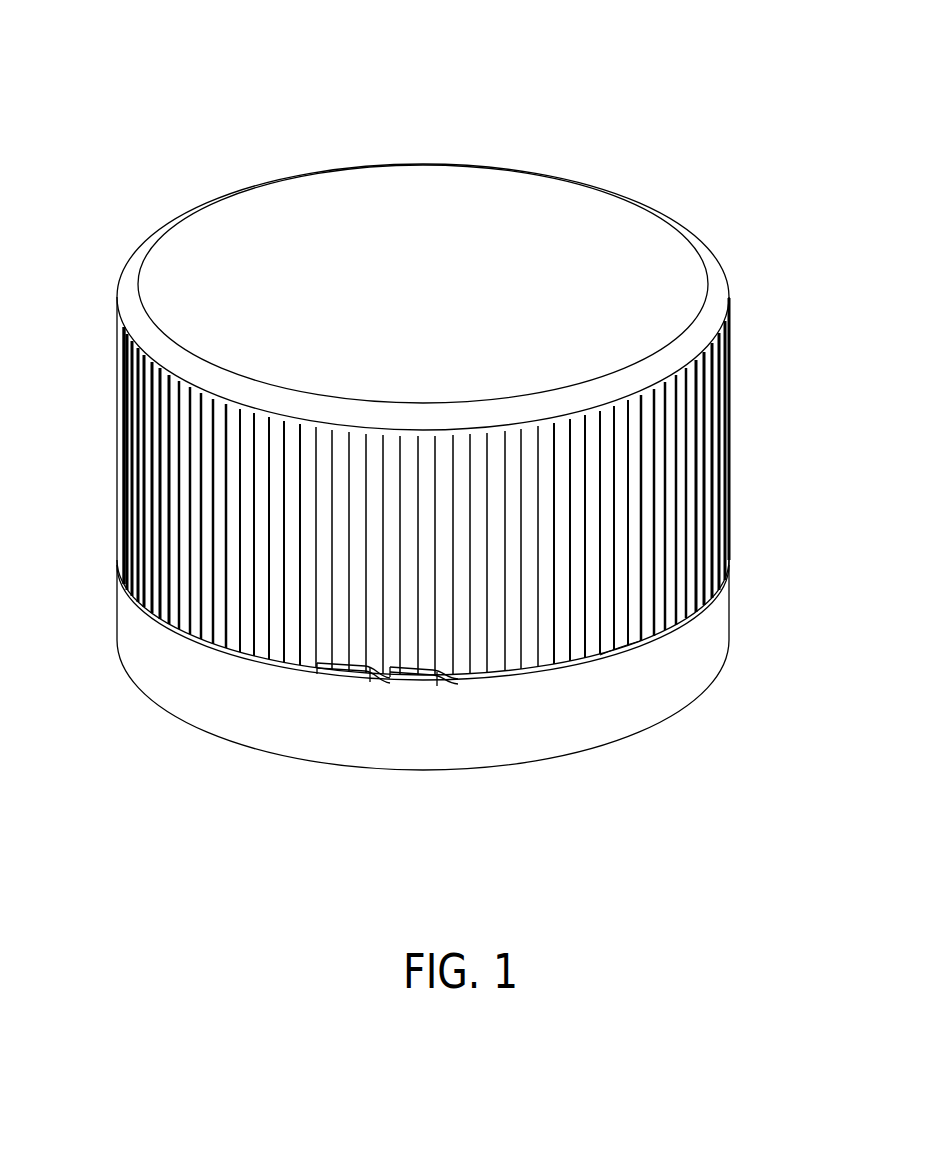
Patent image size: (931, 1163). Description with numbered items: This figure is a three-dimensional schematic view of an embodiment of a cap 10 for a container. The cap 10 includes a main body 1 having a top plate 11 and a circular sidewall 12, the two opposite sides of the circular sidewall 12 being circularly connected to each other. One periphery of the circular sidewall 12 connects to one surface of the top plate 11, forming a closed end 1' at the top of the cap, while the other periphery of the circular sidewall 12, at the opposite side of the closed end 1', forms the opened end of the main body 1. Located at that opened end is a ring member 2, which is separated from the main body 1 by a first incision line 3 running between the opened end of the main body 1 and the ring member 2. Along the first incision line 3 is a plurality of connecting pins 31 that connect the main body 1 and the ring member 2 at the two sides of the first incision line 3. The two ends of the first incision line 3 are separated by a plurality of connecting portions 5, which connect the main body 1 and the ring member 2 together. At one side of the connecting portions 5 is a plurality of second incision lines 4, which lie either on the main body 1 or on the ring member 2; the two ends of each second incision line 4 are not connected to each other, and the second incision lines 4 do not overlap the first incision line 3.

The cap 10 is at (150, 98).
The main body 1 is at (480, 293).
The closed end 1' is at (423, 251).
The top plate 11 is at (675, 290).
The circular sidewall 12 is at (723, 410).
The ring member 2 is at (720, 618).
The first incision line 3 is at (560, 668).
The connecting pins 31 is at (628, 647).
The second incision lines 4 is at (380, 678).
The connecting portions 5 is at (343, 673).